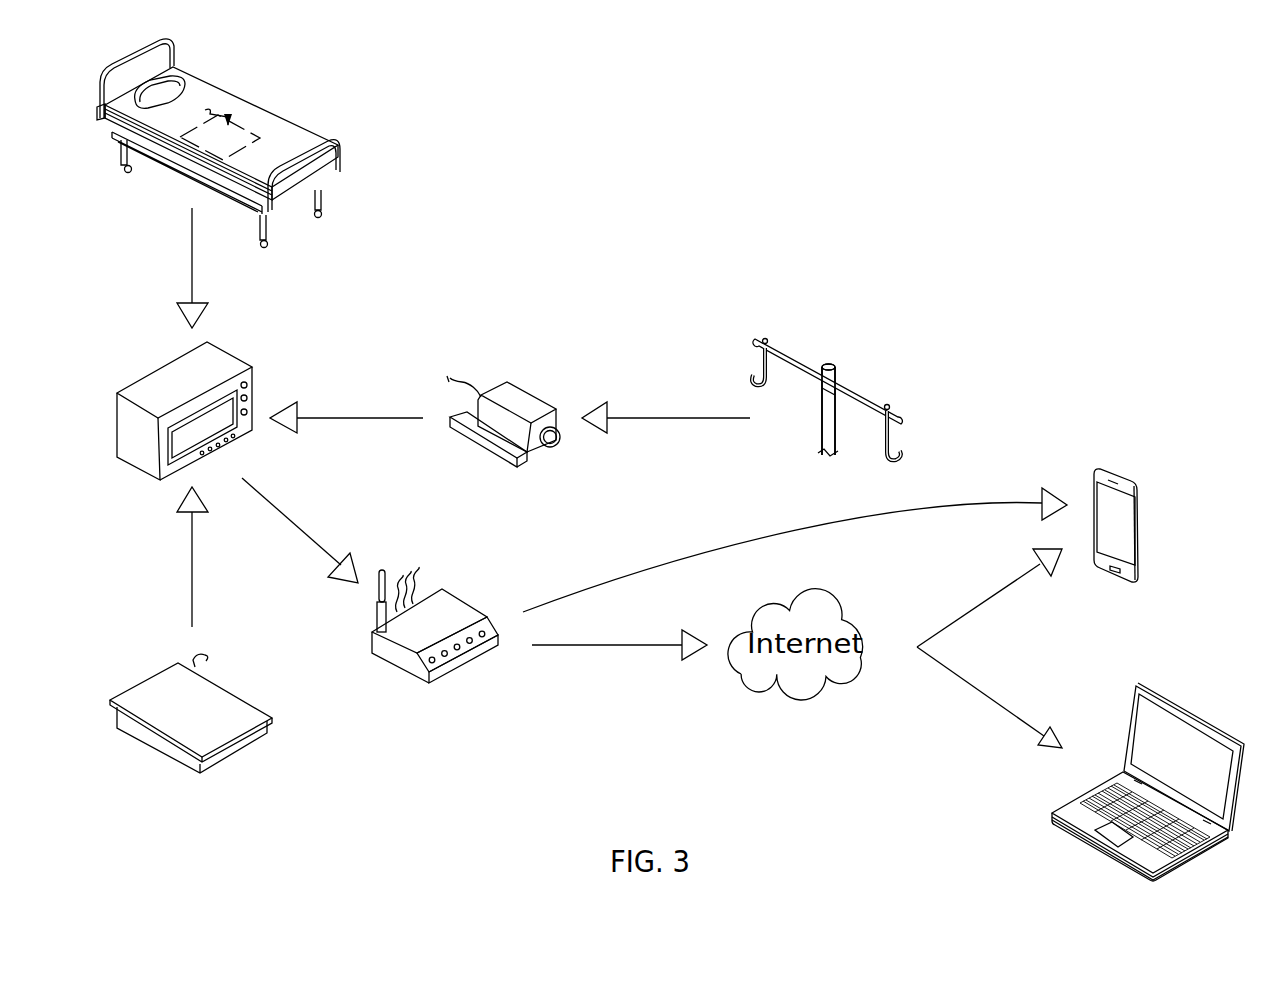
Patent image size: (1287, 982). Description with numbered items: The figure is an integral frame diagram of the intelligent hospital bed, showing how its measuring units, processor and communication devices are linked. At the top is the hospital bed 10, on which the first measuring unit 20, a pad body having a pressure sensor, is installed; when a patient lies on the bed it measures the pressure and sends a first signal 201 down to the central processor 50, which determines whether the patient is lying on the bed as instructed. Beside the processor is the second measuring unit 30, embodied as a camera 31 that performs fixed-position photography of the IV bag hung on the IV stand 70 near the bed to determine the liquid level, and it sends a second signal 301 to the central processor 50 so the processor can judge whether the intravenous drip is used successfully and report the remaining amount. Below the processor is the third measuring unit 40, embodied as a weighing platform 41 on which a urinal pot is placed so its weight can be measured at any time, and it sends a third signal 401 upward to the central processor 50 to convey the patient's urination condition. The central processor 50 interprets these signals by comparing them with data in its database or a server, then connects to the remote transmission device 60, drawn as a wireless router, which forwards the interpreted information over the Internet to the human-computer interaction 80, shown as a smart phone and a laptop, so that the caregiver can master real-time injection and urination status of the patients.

The hospital bed 10 is at (350, 178).
The first measuring unit 20 is at (232, 106).
The first signal 201 is at (192, 255).
The second measuring unit 30 is at (577, 437).
The camera 31 is at (565, 448).
The second signal 301 is at (357, 417).
The third measuring unit 40 is at (254, 739).
The weighing platform 41 is at (245, 758).
The third signal 401 is at (192, 568).
The central processor 50 is at (138, 377).
The remote transmission device 60 is at (460, 590).
The IV stand 70 is at (853, 365).
The human-computer interaction 80 is at (1148, 540).